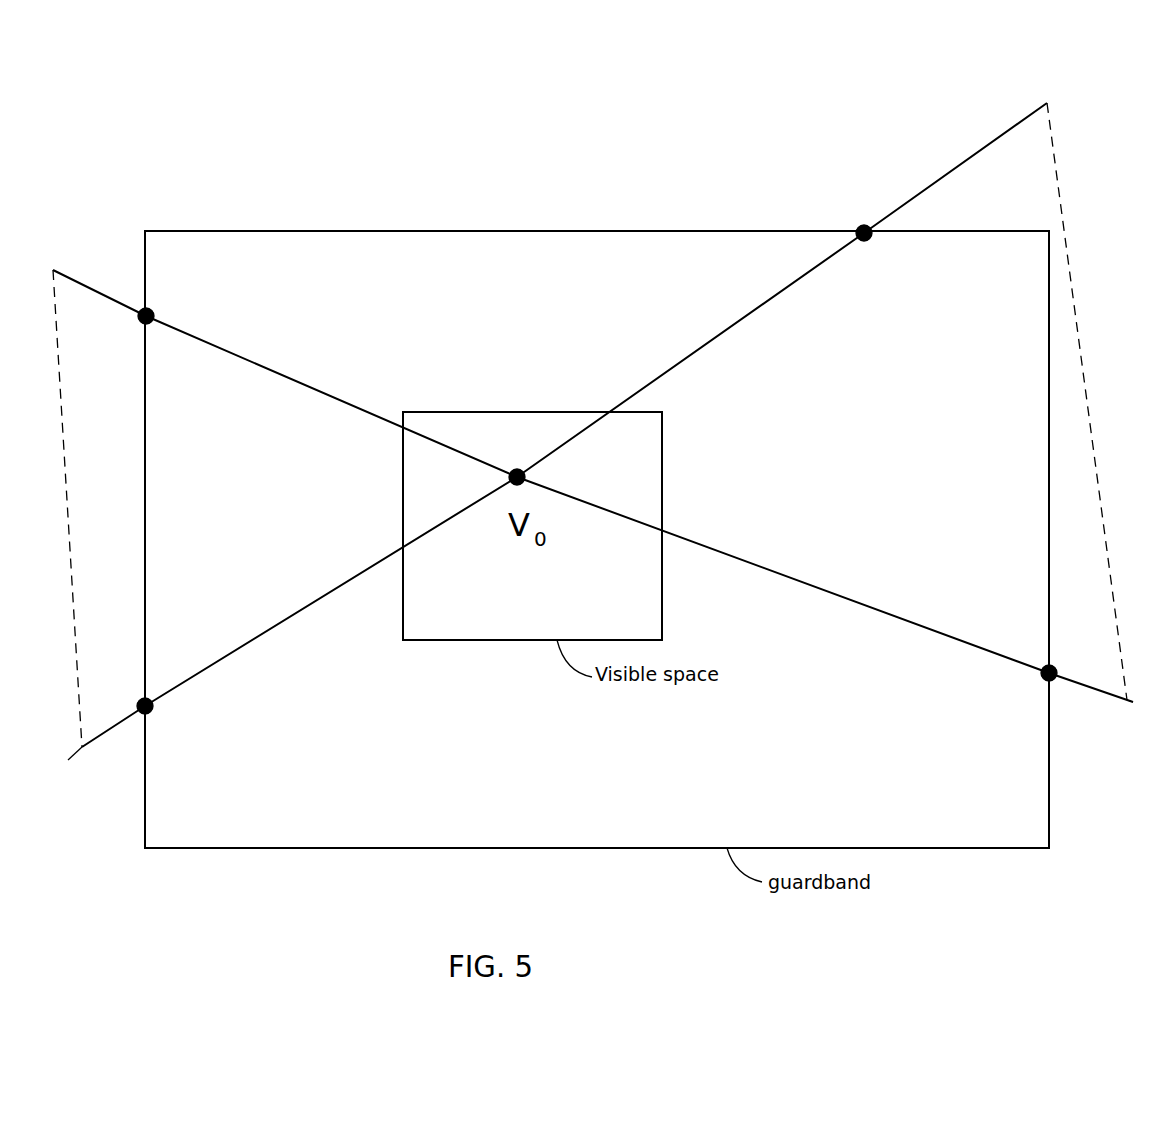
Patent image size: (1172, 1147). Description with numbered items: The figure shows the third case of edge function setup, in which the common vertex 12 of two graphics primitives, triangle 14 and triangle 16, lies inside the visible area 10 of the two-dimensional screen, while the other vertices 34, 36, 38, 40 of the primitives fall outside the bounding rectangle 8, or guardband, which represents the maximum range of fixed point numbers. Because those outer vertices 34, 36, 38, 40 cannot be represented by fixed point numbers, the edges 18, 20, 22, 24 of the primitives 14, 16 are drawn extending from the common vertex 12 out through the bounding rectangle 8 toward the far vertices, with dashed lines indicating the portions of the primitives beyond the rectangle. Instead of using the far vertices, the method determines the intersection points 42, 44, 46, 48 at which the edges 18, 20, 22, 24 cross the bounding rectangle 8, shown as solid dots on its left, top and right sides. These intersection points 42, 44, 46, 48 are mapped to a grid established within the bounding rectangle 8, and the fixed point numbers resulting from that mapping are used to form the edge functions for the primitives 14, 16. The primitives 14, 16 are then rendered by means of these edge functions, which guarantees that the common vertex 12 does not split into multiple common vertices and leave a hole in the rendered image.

The bounding rectangle 8 is at (615, 850).
The visible area 10 is at (488, 640).
The common vertex 12 is at (519, 470).
The triangle 14 is at (258, 526).
The triangle 16 is at (866, 447).
The edge 18 is at (275, 367).
The edge 20 is at (243, 648).
The edge 22 is at (706, 343).
The edge 24 is at (815, 585).
The vertex 34 is at (53, 270).
The vertex 36 is at (82, 747).
The vertex 38 is at (1127, 702).
The vertex 40 is at (1047, 103).
The intersection point 42 is at (152, 311).
The intersection point 44 is at (152, 708).
The intersection point 46 is at (862, 228).
The intersection point 48 is at (1042, 678).